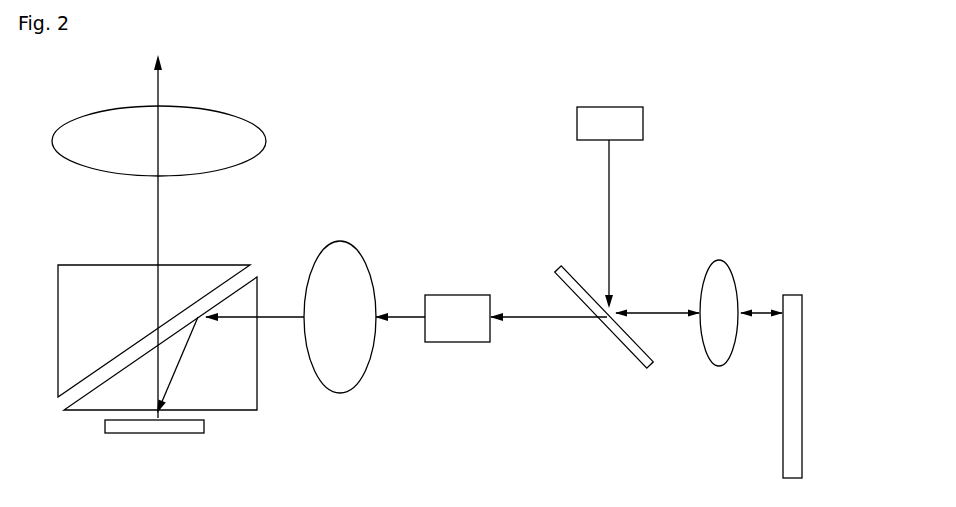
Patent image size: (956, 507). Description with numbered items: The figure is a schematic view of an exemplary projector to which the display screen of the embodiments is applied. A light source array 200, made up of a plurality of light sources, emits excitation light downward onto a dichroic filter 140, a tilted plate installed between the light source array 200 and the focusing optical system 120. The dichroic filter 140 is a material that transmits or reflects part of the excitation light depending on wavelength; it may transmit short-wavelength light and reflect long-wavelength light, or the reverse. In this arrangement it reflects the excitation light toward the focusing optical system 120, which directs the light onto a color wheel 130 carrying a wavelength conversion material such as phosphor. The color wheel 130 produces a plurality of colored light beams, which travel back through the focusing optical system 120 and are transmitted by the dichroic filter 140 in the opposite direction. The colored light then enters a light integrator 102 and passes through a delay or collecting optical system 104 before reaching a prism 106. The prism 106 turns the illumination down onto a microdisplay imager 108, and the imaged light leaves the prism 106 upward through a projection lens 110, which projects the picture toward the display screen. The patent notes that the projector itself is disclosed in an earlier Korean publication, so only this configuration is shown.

The light integrator 102 is at (459, 294).
The collecting optical system 104 is at (340, 241).
The prism 106 is at (201, 264).
The microdisplay imager 108 is at (155, 435).
The projection lens 110 is at (228, 112).
The focusing optical system 120 is at (720, 259).
The color wheel 130 is at (795, 294).
The dichroic filter 140 is at (628, 347).
The light source array 200 is at (576, 125).